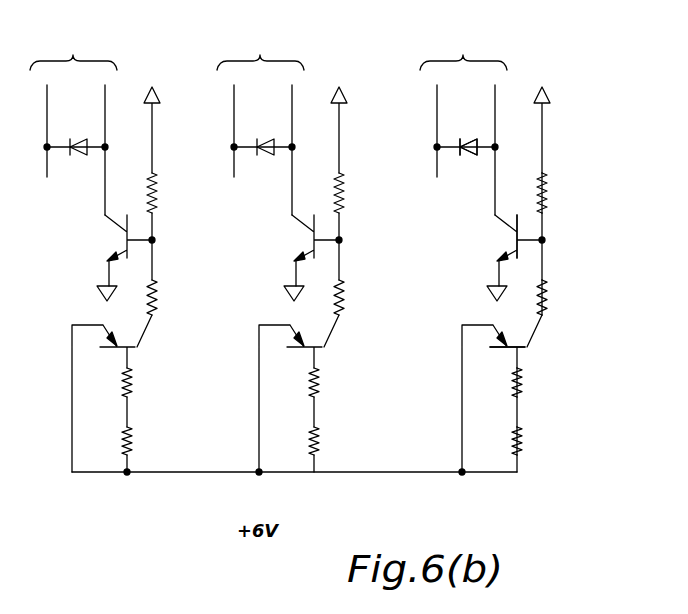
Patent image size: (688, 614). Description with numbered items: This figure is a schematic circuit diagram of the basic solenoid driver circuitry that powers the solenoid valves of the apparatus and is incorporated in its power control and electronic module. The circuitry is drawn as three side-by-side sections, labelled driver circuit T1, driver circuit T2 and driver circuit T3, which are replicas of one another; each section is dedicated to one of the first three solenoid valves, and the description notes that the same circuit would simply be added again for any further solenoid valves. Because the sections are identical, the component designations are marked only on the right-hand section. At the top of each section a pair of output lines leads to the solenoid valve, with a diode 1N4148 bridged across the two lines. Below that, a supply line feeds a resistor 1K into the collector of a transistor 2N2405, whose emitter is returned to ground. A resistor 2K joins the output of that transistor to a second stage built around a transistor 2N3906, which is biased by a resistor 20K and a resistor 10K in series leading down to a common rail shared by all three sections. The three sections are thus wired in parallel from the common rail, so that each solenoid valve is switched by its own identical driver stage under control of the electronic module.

The first transistor stage T1 is at (100, 254).
The second transistor stage T2 is at (284, 254).
The third transistor stage T3 is at (491, 254).
The diode 1N4148 is at (472, 156).
The 1K resistor 1K is at (542, 177).
The 2K resistor 2K is at (565, 297).
The NPN transistor 2N2405 is at (540, 243).
The PNP transistor 2N3906 is at (540, 333).
The 20K resistor 20K is at (519, 372).
The 10K resistor 10K is at (519, 445).